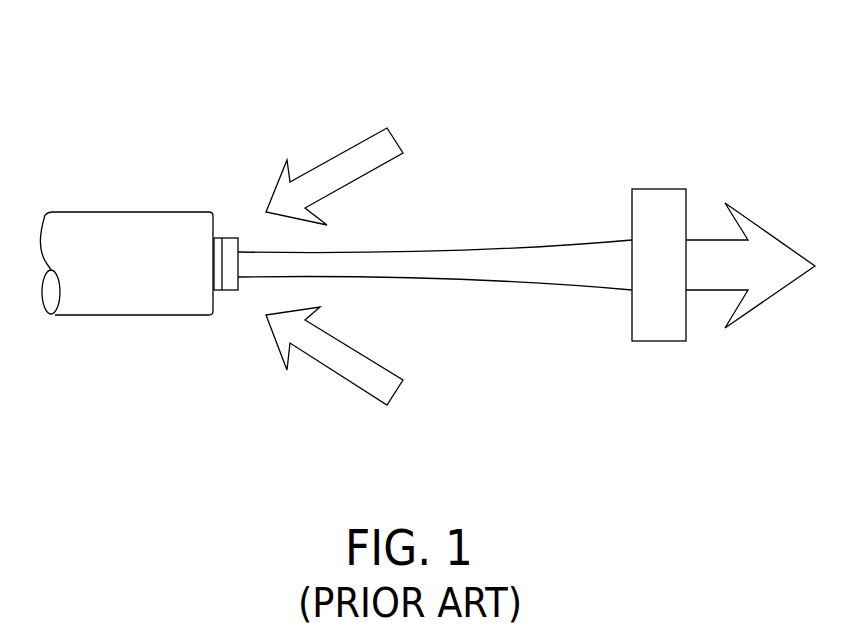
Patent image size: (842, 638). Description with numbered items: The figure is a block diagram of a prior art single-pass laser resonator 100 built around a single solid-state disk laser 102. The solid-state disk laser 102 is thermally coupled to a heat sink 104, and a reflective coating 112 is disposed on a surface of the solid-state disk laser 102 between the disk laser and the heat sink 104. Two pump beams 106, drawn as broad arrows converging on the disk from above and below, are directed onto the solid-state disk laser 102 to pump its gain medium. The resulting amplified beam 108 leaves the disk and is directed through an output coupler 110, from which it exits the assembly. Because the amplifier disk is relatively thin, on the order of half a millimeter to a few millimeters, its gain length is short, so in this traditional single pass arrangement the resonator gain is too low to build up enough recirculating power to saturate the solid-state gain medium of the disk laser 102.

The single-pass laser resonator 100 is at (533, 102).
The solid-state disk laser 102 is at (240, 245).
The heat sink 104 is at (118, 212).
The pump beams 106 is at (380, 168).
The amplified beam 108 is at (612, 240).
The output coupler 110 is at (656, 189).
The reflective coating 112 is at (216, 292).